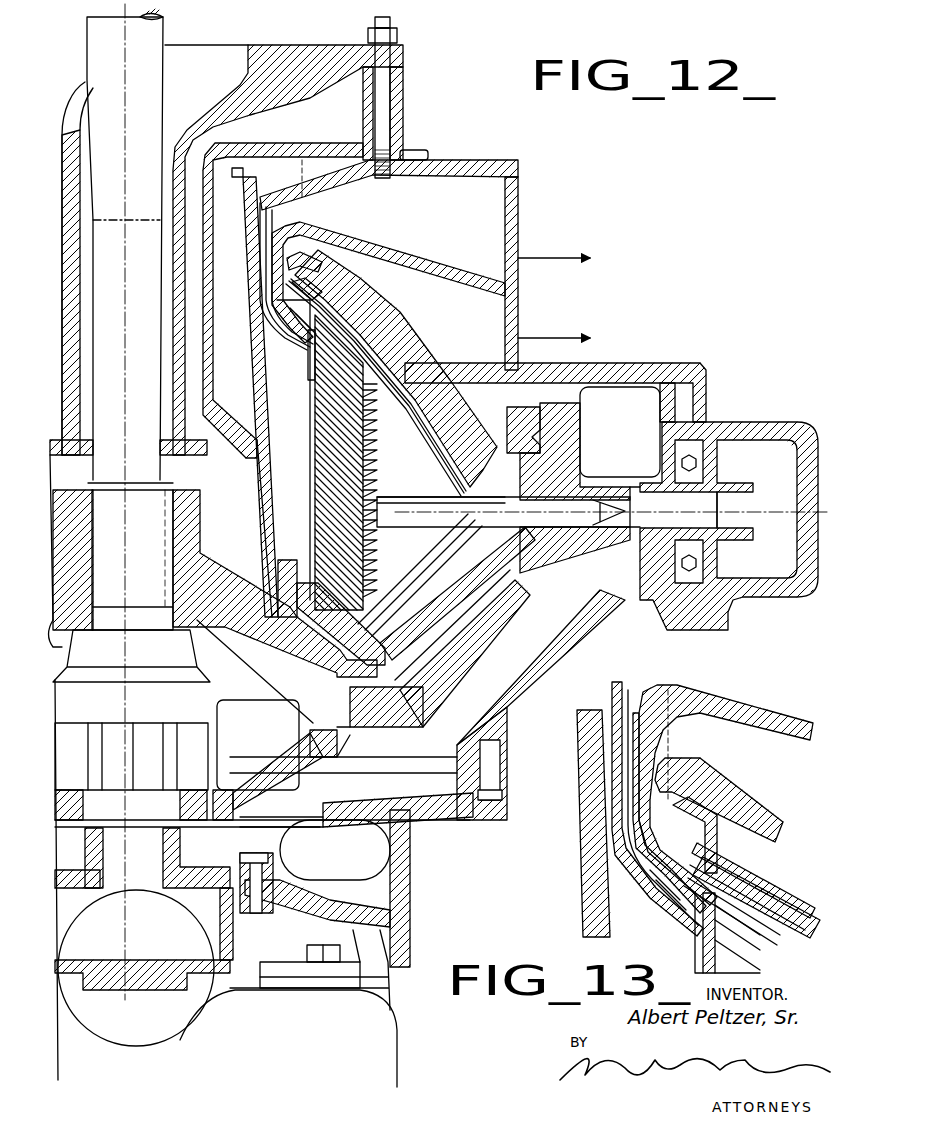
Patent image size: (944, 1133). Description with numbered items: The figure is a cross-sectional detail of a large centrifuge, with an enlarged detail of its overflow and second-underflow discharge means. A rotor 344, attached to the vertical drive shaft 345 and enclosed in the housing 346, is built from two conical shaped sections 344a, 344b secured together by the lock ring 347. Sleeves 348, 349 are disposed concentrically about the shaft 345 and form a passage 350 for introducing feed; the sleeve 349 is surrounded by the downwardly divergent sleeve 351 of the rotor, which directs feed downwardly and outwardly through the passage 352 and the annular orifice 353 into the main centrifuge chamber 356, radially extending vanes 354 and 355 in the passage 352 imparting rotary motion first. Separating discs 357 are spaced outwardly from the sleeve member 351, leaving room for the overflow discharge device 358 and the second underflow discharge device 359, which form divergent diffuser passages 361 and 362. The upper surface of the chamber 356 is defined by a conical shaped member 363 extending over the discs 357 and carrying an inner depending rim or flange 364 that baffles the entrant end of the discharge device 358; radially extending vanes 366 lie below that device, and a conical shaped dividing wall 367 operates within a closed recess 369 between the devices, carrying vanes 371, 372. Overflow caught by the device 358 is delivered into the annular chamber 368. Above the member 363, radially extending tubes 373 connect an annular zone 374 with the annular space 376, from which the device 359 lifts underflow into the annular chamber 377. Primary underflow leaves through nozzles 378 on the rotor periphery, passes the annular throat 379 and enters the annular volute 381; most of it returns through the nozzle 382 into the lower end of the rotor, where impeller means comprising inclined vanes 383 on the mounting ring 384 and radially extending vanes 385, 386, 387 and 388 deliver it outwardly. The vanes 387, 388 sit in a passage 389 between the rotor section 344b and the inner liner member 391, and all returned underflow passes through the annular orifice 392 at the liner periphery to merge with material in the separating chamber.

In FIG. 12, the rotor 344 is at (572, 402).
In FIG. 13, the rotor 344 is at (800, 895).
In FIG. 12, the conical shaped rotor section 344a is at (372, 338).
In FIG. 12, the conical shaped rotor section 344b is at (484, 596).
In FIG. 12, the vertical drive shaft 345 is at (160, 76).
In FIG. 12, the housing 346 is at (573, 648).
In FIG. 12, the lock ring 347 is at (533, 403).
In FIG. 12, the sleeve 348 is at (176, 270).
In FIG. 12, the sleeve 349 is at (208, 296).
In FIG. 12, the passage 350 is at (198, 326).
In FIG. 12, the downwardly divergent sleeve 351 is at (262, 461).
In FIG. 13, the downwardly divergent sleeve 351 is at (588, 788).
In FIG. 12, the passage 352 is at (280, 555).
In FIG. 12, the annular orifice 353 is at (424, 654).
In FIG. 12, the radially extending vane 354 is at (234, 598).
In FIG. 12, the radially extending vane 355 is at (300, 640).
In FIG. 12, the main centrifuge chamber 356 is at (415, 549).
In FIG. 12, the separating discs 357 is at (372, 471).
In FIG. 13, the separating discs 357 is at (758, 966).
In FIG. 12, the overflow discharge device 358 is at (302, 337).
In FIG. 13, the overflow discharge device 358 is at (628, 813).
In FIG. 12, the second underflow discharge device 359 is at (302, 300).
In FIG. 13, the second underflow discharge device 359 is at (682, 836).
In FIG. 12, the divergent diffuser passage 361 is at (296, 325).
In FIG. 13, the divergent diffuser passage 361 is at (640, 867).
In FIG. 12, the divergent diffuser passage 362 is at (293, 290).
In FIG. 13, the divergent diffuser passage 362 is at (650, 808).
In FIG. 12, the conical shaped member 363 is at (392, 410).
In FIG. 13, the conical shaped member 363 is at (776, 951).
In FIG. 12, the inner depending rim or flange 364 is at (309, 382).
In FIG. 13, the inner depending rim or flange 364 is at (700, 958).
In FIG. 12, the radially extending vanes 366 is at (258, 418).
In FIG. 13, the radially extending vanes 366 is at (620, 914).
In FIG. 12, the conical shaped dividing wall 367 is at (305, 307).
In FIG. 13, the conical shaped dividing wall 367 is at (687, 894).
In FIG. 12, the annular chamber 368 is at (497, 230).
In FIG. 12, the closed recess 369 is at (278, 305).
In FIG. 13, the closed recess 369 is at (645, 852).
In FIG. 13, the vane 371 is at (712, 880).
In FIG. 13, the vane 372 is at (670, 880).
In FIG. 12, the tubes 373 is at (400, 410).
In FIG. 13, the tubes 373 is at (778, 938).
In FIG. 12, the annular zone 374 is at (490, 498).
In FIG. 12, the annular space 376 is at (317, 312).
In FIG. 13, the annular space 376 is at (703, 873).
In FIG. 12, the annular chamber 377 is at (490, 316).
In FIG. 12, the nozzles 378 is at (617, 531).
In FIG. 12, the annular throat 379 is at (733, 497).
In FIG. 12, the annular volute 381 is at (768, 567).
In FIG. 12, the nozzle 382 is at (150, 860).
In FIG. 12, the inclined vanes 383 is at (187, 735).
In FIG. 12, the mounting ring 384 is at (200, 797).
In FIG. 12, the radially extending vane 385 is at (228, 704).
In FIG. 12, the radially extending vane 386 is at (280, 676).
In FIG. 12, the radially extending vane 387 is at (443, 637).
In FIG. 12, the radially extending vane 388 is at (447, 571).
In FIG. 12, the passage 389 is at (440, 600).
In FIG. 12, the inner liner member 391 is at (440, 602).
In FIG. 12, the annular orifice 392 is at (496, 538).